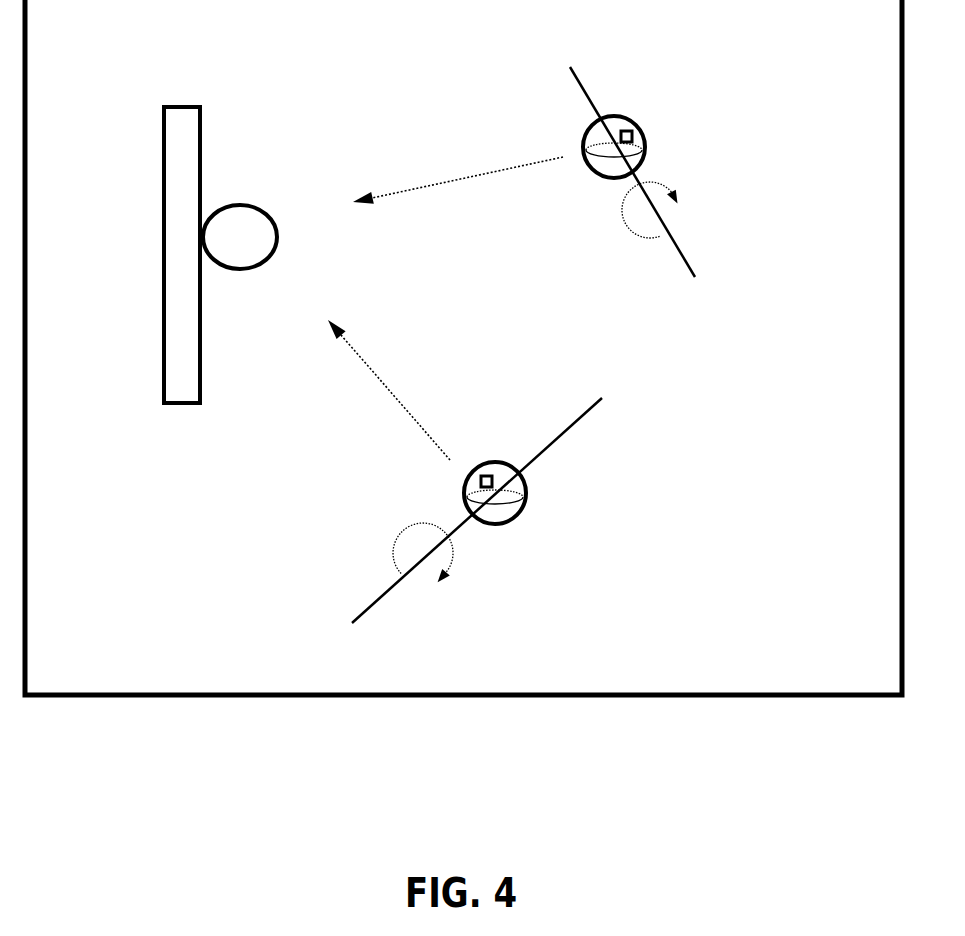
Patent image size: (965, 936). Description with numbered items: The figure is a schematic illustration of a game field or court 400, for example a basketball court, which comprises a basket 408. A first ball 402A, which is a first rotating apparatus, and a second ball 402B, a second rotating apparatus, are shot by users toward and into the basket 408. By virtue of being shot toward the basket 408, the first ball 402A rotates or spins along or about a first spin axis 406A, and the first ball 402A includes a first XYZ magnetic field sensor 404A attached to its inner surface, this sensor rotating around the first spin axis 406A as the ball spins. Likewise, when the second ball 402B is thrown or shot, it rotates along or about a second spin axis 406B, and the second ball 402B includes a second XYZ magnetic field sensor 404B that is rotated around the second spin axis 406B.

The game field 400 is at (210, 687).
The first ball 402A is at (588, 120).
The first XYZ magnetic field sensor 404A is at (634, 133).
The first spin axis 406A is at (577, 75).
The second ball 402B is at (463, 487).
The second XYZ magnetic field sensor 404B is at (488, 476).
The second spin axis 406B is at (537, 458).
The basket 408 is at (278, 240).